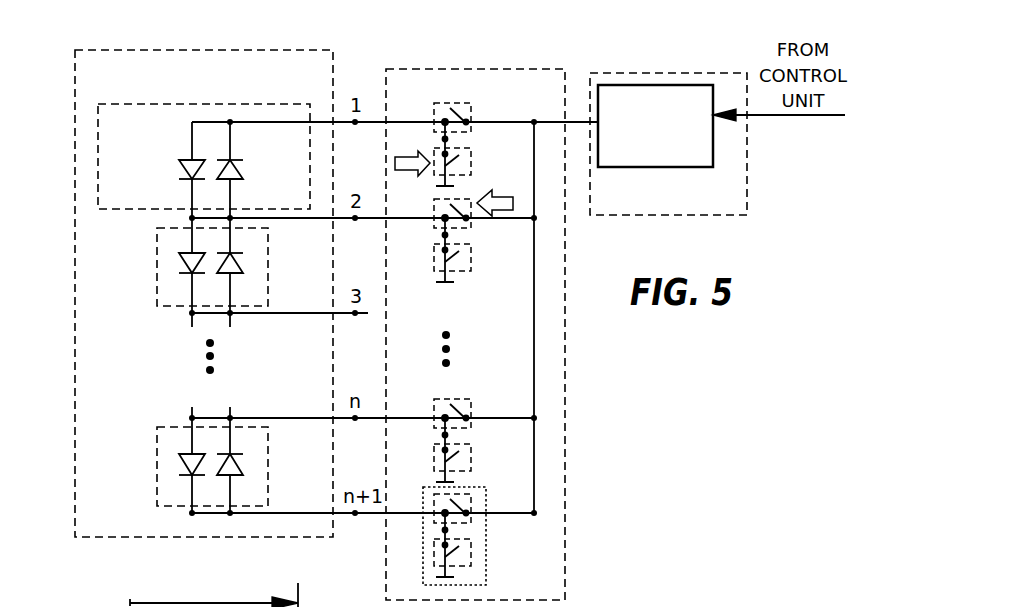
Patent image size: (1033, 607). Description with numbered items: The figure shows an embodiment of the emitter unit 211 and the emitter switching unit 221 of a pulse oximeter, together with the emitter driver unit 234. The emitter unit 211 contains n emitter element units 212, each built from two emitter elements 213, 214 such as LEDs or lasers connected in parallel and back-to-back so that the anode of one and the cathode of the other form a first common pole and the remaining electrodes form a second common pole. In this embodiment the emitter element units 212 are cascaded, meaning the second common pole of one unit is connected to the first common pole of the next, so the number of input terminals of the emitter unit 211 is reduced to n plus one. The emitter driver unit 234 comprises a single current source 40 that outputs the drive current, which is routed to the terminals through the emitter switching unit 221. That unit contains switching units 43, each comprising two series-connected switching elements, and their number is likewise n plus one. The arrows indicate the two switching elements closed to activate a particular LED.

The emitter unit 211 is at (160, 50).
The emitter element unit 212 is at (163, 104).
The emitter element 213 is at (181, 163).
The emitter element 214 is at (242, 174).
The emitter switching unit 221 is at (444, 69).
The emitter driver unit 234 is at (641, 73).
The current source 40 is at (662, 167).
The switching unit 43 is at (488, 545).